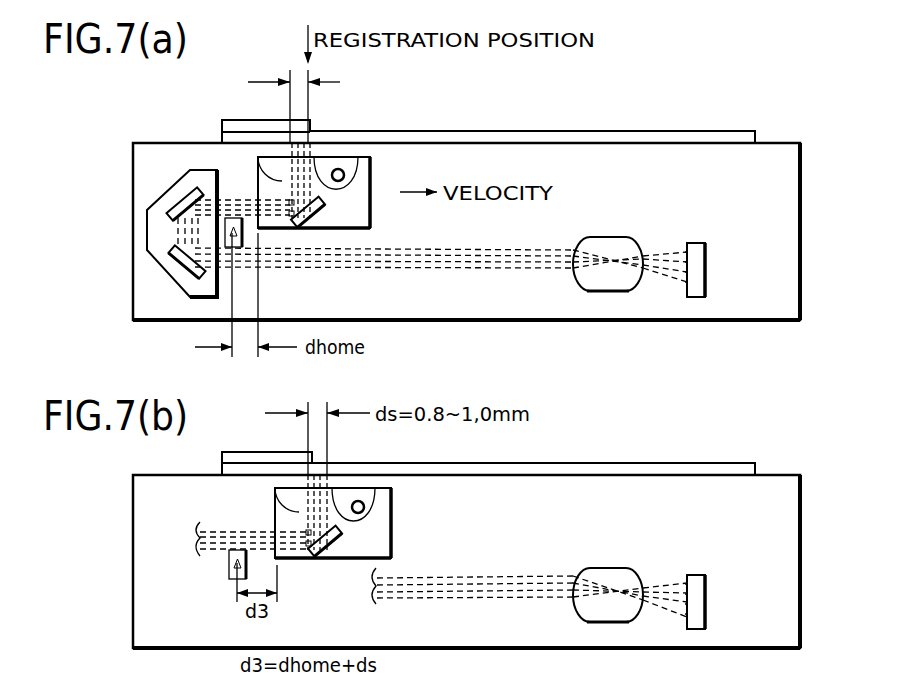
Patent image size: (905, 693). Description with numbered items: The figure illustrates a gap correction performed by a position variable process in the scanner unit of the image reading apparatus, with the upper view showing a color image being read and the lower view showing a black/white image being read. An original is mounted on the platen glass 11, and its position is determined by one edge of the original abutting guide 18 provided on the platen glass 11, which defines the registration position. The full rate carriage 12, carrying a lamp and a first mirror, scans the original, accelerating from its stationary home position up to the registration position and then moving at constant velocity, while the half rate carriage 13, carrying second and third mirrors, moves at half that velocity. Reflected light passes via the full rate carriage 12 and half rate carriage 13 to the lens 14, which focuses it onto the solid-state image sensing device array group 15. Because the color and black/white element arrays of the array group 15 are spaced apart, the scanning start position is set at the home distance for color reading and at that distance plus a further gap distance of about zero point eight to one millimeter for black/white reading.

In FIG. 7A, the platen glass 11 is at (645, 130).
In FIG. 7B, the platen glass 11 is at (645, 462).
In FIG. 7A, the full rate carriage 12 is at (370, 168).
In FIG. 7B, the full rate carriage 12 is at (391, 498).
In FIG. 7A, the half rate carriage 13 is at (160, 270).
In FIG. 7A, the lens 14 is at (573, 284).
In FIG. 7B, the lens 14 is at (573, 612).
In FIG. 7A, the solid-state image sensing device array group 15 is at (707, 280).
In FIG. 7B, the solid-state image sensing device array group 15 is at (707, 611).
In FIG. 7A, the original abutting guide 18 is at (223, 119).
In FIG. 7B, the original abutting guide 18 is at (226, 451).